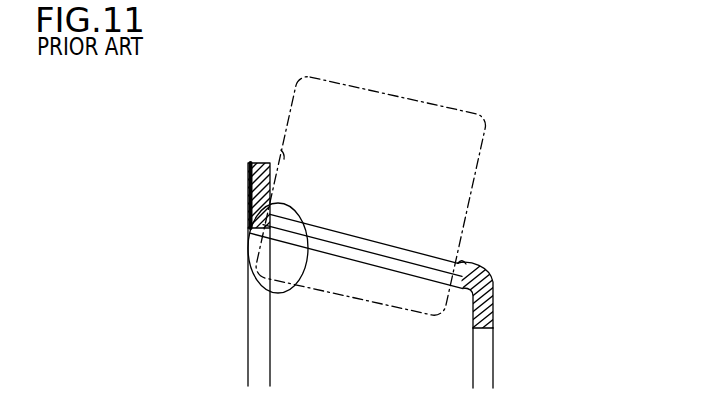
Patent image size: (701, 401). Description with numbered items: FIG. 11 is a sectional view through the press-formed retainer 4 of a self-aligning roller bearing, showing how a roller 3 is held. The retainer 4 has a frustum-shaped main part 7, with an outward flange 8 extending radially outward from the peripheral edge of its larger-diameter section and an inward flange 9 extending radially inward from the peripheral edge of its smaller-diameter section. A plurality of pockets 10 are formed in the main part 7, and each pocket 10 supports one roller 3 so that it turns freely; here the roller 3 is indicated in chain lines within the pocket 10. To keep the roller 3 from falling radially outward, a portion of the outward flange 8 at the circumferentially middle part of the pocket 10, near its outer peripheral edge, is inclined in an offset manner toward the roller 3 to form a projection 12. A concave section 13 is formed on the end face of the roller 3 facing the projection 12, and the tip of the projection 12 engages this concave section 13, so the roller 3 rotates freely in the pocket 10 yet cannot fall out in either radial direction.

The roller 3 is at (488, 143).
The retainer 4 is at (494, 283).
The main part 7 is at (427, 255).
The outward flange 8 is at (247, 172).
The inward flange 9 is at (494, 322).
The pocket 10 is at (461, 258).
The projection 12 is at (265, 294).
The concave section 13 is at (283, 154).